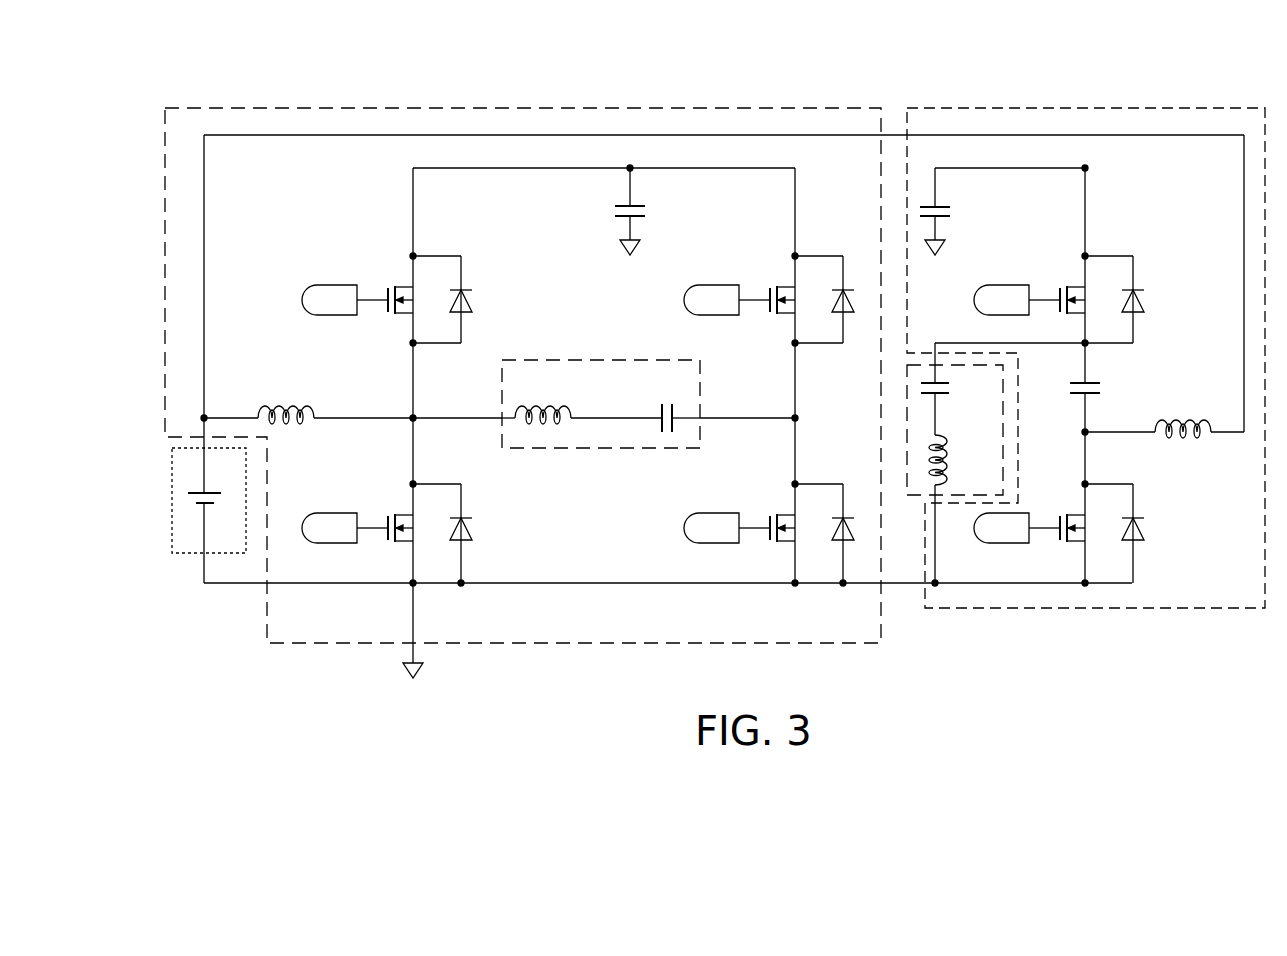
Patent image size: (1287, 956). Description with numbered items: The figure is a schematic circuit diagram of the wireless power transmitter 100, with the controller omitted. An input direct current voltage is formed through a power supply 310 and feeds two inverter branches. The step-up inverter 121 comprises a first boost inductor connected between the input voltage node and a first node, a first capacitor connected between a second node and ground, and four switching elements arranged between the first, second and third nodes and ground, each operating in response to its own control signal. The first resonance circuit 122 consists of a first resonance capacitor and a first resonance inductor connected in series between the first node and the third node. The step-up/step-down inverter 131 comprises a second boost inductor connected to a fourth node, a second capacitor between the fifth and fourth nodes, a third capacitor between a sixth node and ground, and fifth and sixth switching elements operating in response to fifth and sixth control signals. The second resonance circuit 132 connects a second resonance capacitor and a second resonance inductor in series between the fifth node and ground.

The wireless power transmitter 100 is at (653, 18).
The step-up inverter 121 is at (779, 107).
The first resonance circuit 122 is at (586, 360).
The step-up/step-down inverter 131 is at (1000, 107).
The second resonance circuit 132 is at (910, 497).
The power supply 310 is at (186, 555).